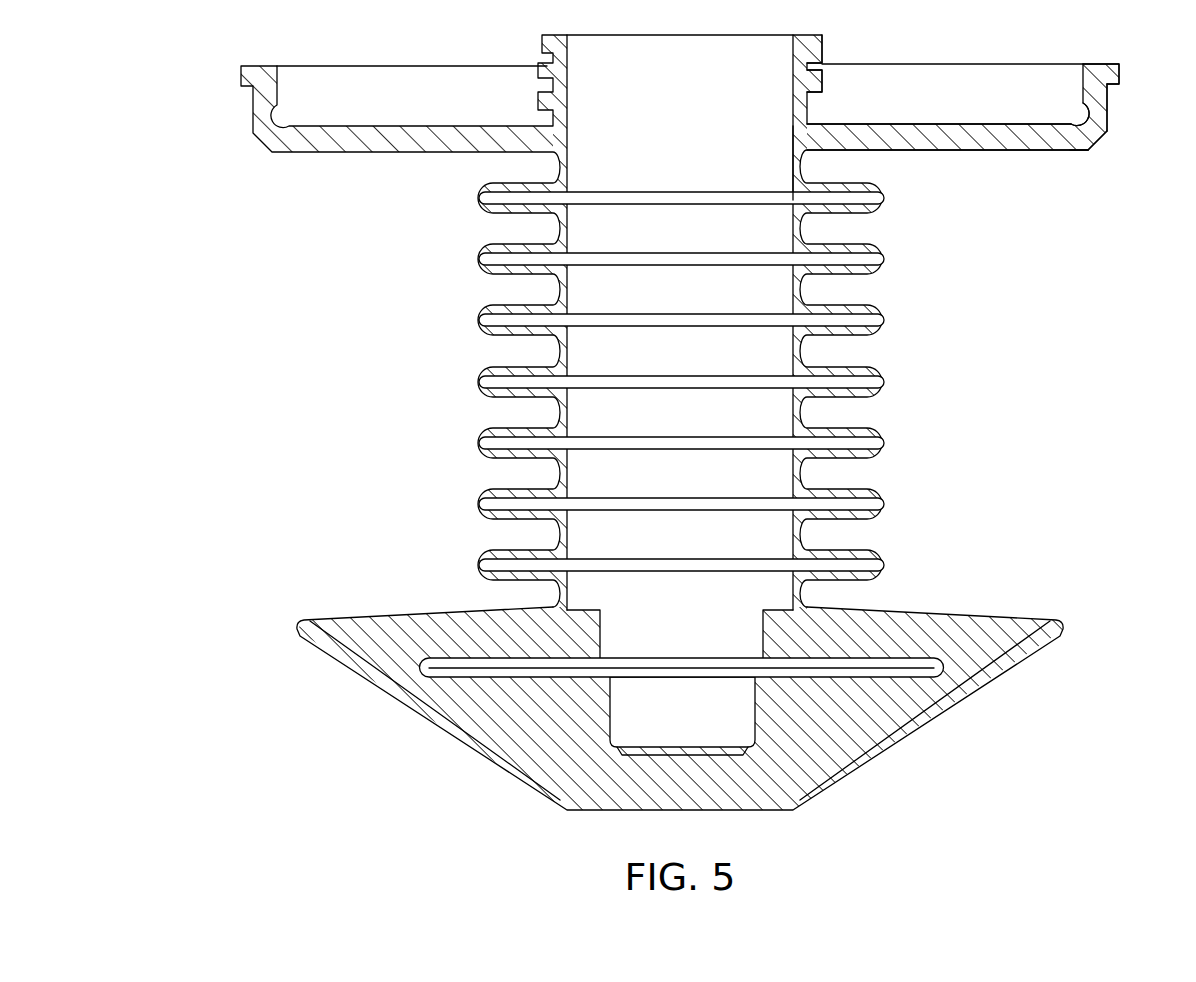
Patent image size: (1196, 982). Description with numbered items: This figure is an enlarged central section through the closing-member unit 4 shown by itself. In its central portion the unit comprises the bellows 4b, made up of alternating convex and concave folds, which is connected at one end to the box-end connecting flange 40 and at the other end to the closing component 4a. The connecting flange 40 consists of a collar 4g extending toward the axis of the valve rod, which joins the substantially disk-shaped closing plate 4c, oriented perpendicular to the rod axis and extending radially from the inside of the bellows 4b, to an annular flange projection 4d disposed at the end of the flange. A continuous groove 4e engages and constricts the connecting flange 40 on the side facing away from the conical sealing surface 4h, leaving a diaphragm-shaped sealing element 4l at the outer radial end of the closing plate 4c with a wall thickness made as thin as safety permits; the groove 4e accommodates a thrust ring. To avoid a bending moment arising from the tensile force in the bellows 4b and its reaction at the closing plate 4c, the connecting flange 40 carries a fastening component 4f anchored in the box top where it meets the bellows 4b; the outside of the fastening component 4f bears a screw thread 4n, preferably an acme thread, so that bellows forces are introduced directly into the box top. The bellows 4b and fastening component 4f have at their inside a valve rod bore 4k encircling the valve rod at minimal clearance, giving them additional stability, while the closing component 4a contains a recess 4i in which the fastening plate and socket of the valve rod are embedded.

The closing-member unit 4 is at (930, 323).
The connecting flange 40 is at (228, 60).
The closing component 4a is at (1006, 652).
The bellows 4b is at (885, 436).
The closing plate 4c is at (944, 144).
The annular flange projection 4d is at (1108, 74).
The groove 4e is at (1086, 118).
The fastening component 4f is at (808, 56).
The collar 4g is at (1100, 97).
The conical sealing surface 4h is at (1090, 142).
The recess 4i is at (763, 640).
The valve rod bore 4k is at (793, 164).
The diaphragm-shaped sealing element 4l is at (1094, 135).
The screw thread 4n is at (811, 67).